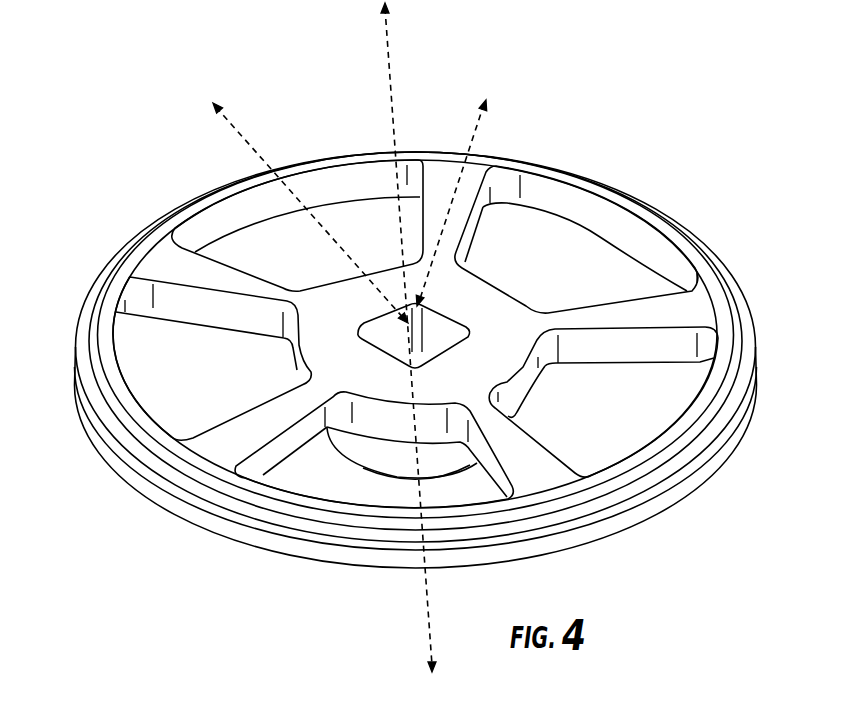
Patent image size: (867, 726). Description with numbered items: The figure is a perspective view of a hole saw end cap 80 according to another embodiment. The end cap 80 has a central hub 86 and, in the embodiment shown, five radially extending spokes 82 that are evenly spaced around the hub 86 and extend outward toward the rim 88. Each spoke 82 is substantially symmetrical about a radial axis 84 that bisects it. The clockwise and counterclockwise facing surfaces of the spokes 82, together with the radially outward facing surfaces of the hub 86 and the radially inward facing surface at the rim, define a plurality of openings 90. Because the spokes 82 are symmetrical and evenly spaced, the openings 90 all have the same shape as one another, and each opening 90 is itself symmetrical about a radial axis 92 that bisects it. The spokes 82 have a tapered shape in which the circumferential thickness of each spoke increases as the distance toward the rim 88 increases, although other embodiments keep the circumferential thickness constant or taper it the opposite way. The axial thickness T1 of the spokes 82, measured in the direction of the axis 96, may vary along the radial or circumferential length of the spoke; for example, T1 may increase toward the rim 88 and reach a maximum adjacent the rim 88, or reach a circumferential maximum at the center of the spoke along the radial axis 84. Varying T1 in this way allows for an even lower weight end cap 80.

The end cap 80 is at (773, 188).
The radially extending spokes 82 is at (432, 202).
The radial axis 84 is at (440, 233).
The hub 86 is at (486, 389).
The rim 88 is at (713, 420).
The openings 90 is at (165, 397).
The radial axis 92 is at (312, 215).
The axis 96 is at (428, 622).
The thickness T1 is at (200, 300).